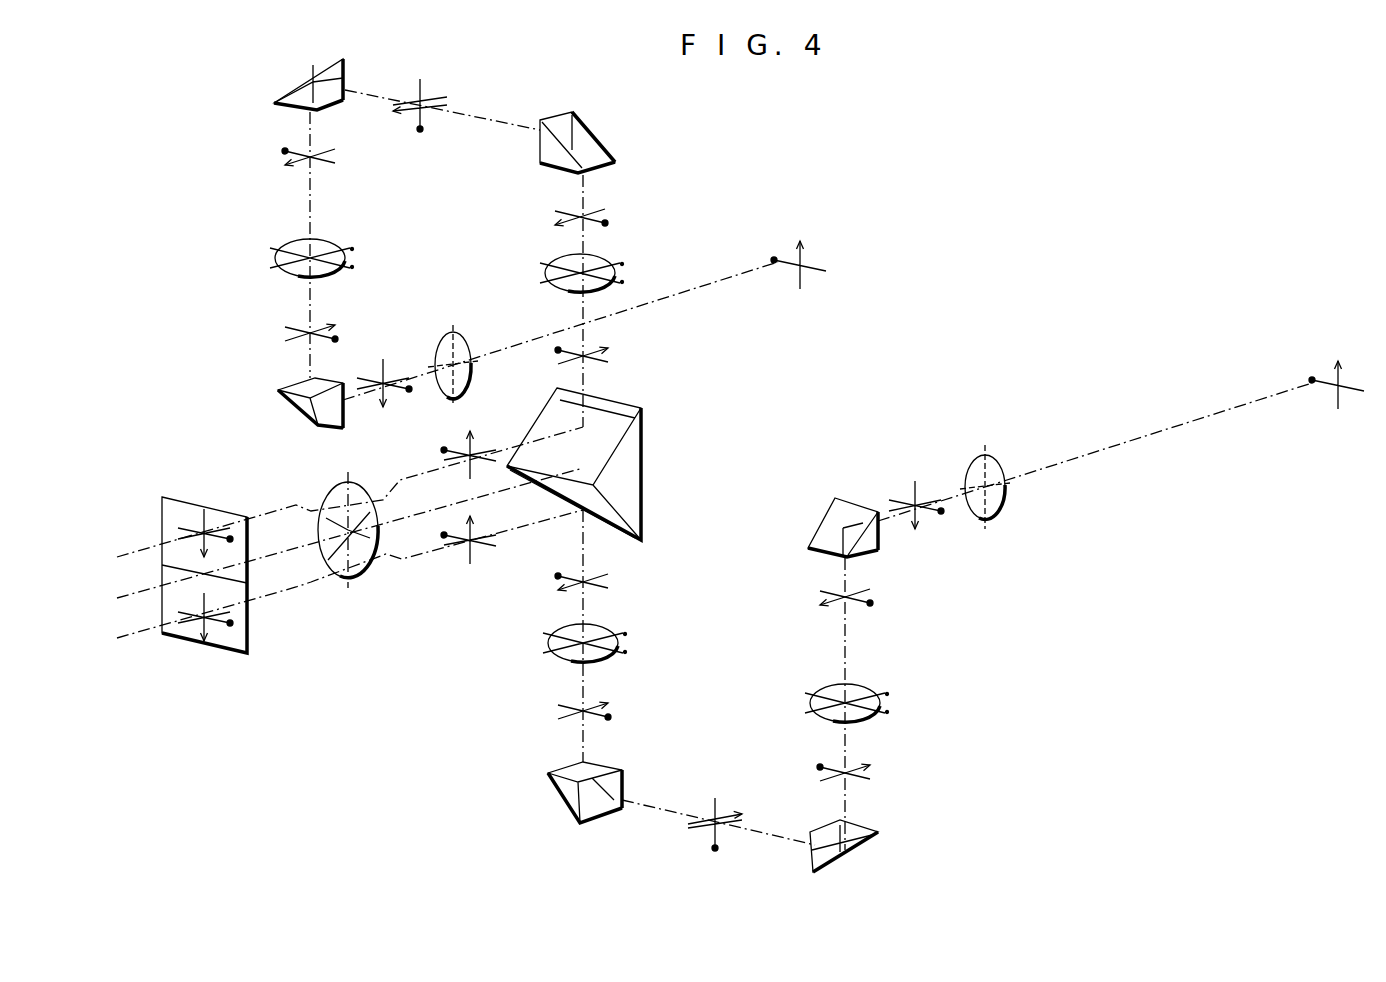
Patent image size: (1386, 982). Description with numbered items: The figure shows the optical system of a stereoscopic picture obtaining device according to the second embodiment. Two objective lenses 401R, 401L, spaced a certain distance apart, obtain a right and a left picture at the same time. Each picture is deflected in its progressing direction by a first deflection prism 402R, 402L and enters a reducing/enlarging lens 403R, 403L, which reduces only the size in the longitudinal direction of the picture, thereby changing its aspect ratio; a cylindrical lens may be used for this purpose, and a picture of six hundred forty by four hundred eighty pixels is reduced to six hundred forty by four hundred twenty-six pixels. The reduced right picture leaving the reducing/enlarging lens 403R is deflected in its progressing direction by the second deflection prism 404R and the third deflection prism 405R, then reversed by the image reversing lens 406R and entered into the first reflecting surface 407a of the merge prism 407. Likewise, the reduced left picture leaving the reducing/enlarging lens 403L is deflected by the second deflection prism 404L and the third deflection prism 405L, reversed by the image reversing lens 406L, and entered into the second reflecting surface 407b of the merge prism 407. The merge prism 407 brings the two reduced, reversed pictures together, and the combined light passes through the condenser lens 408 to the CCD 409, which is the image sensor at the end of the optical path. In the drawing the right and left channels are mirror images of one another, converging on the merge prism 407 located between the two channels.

The objective lens 401L is at (471, 348).
The first deflection prism 402L is at (288, 386).
The reducing/enlarging lens 403L is at (286, 239).
The second deflection prism 404L is at (286, 84).
The third deflection prism 405L is at (590, 135).
The image reversing lens 406L is at (615, 261).
The objective lens 401R is at (1006, 468).
The first deflection prism 402R is at (826, 510).
The reducing/enlarging lens 403R is at (876, 687).
The second deflection prism 404R is at (870, 847).
The third deflection prism 405R is at (556, 795).
The image reversing lens 406R is at (559, 666).
The merge prism 407 is at (632, 467).
The first reflecting surface 407a is at (607, 521).
The second reflecting surface 407b is at (611, 421).
The condenser lens 408 is at (365, 551).
The CCD 409 is at (176, 497).